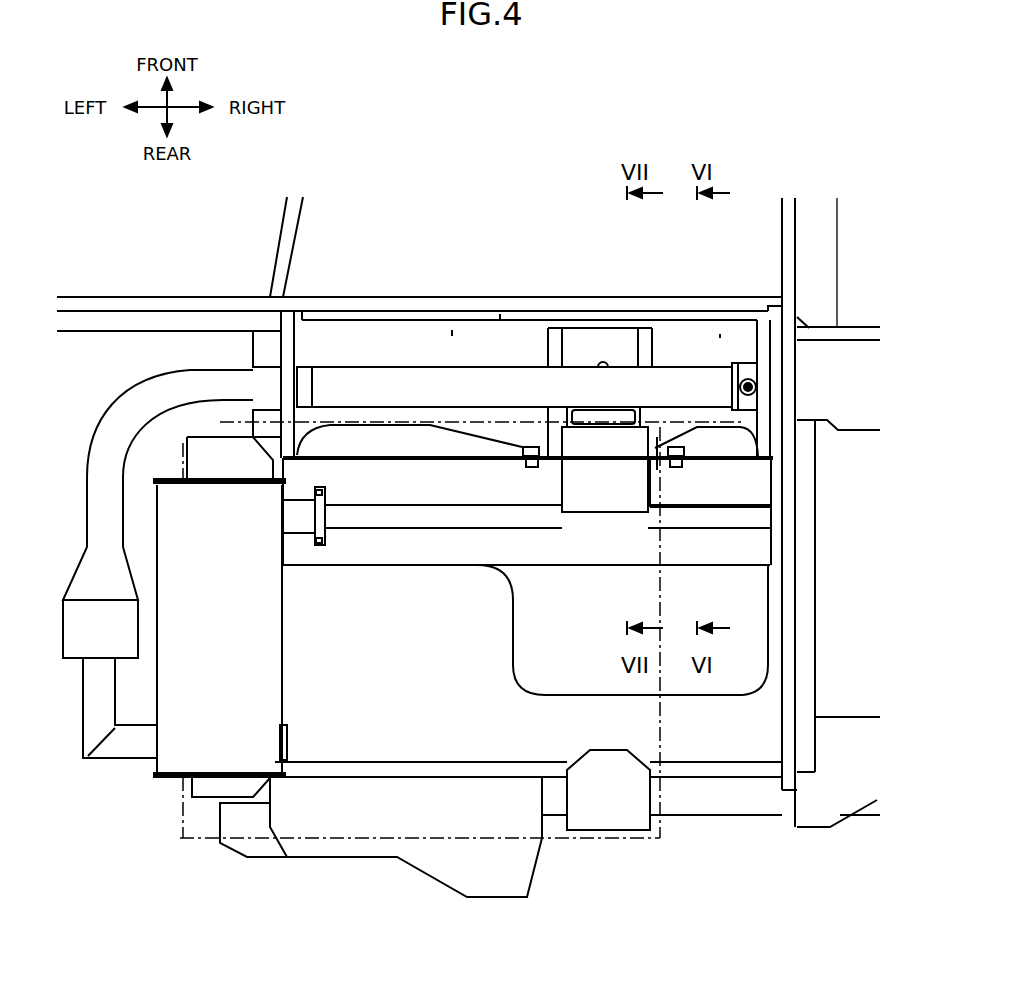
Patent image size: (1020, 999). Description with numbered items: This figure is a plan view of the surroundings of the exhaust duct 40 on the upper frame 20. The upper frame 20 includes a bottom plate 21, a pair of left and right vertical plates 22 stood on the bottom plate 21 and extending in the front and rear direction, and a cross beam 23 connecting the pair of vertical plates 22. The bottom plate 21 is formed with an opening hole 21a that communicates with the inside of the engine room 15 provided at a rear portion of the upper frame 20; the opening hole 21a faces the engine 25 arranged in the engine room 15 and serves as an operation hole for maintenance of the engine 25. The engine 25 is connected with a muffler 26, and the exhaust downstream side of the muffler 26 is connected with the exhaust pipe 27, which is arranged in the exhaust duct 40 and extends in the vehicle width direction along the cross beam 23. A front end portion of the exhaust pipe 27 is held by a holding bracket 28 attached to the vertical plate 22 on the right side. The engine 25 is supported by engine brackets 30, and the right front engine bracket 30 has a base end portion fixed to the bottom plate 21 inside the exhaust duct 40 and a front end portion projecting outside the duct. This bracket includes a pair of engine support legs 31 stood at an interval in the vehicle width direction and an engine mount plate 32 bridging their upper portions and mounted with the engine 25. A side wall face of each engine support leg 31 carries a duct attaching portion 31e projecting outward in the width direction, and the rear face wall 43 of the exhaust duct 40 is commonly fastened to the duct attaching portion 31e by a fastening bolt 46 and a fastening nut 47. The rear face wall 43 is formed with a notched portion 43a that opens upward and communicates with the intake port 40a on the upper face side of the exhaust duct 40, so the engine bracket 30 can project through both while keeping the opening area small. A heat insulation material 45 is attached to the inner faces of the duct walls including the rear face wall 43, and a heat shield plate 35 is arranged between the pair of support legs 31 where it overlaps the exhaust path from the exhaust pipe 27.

The engine room 15 is at (686, 731).
The upper frame 20 is at (816, 173).
The bottom plate 21 is at (744, 745).
The opening hole 21a is at (580, 686).
The vertical plate 22 is at (273, 248).
The cross beam 23 is at (660, 297).
The engine 25 is at (447, 840).
The muffler 26 is at (278, 633).
The exhaust pipe 27 is at (412, 375).
The holding bracket 28 is at (755, 307).
The engine bracket 30 is at (192, 448).
The engine support leg 31 is at (555, 347).
The duct attaching portion 31e is at (552, 457).
The engine mount plate 32 is at (628, 517).
The heat shield plate 35 is at (605, 334).
The exhaust duct 40 is at (532, 571).
The intake port 40a is at (388, 451).
The rear face wall 43 is at (477, 560).
The notched portion 43a is at (657, 486).
The heat insulation material 45 is at (452, 335).
The fastening bolt 46 is at (533, 467).
The fastening nut 47 is at (522, 447).